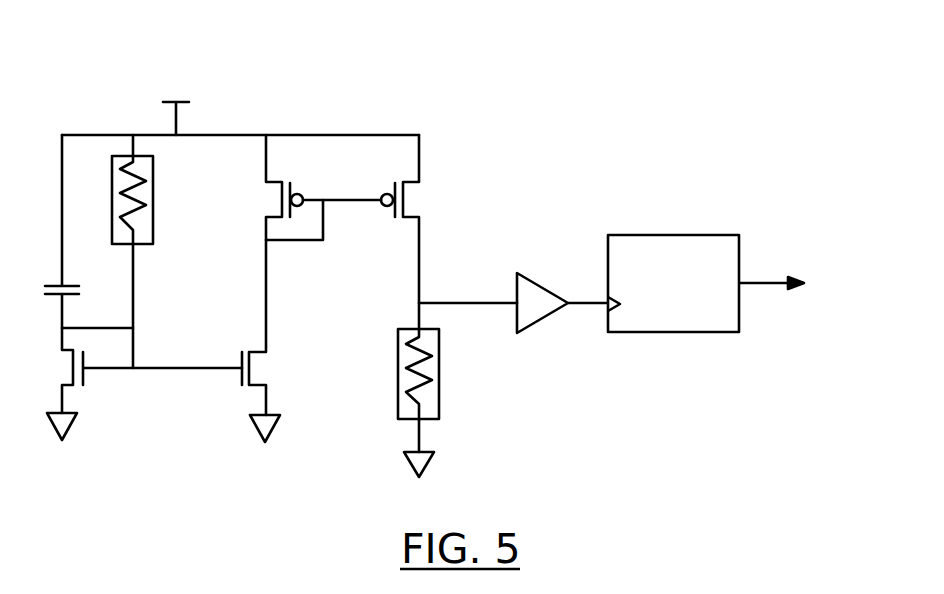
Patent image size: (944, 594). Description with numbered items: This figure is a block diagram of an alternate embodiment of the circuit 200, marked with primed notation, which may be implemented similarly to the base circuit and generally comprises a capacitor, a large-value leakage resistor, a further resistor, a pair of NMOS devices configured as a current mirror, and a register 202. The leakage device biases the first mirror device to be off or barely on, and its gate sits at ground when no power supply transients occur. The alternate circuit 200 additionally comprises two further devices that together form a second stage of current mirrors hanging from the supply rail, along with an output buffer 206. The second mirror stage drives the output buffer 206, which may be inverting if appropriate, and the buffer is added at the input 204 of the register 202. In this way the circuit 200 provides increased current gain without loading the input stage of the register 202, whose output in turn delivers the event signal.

The circuit 200 is at (103, 72).
The register 202 is at (710, 235).
The input 204 is at (606, 304).
The output buffer 206 is at (532, 276).